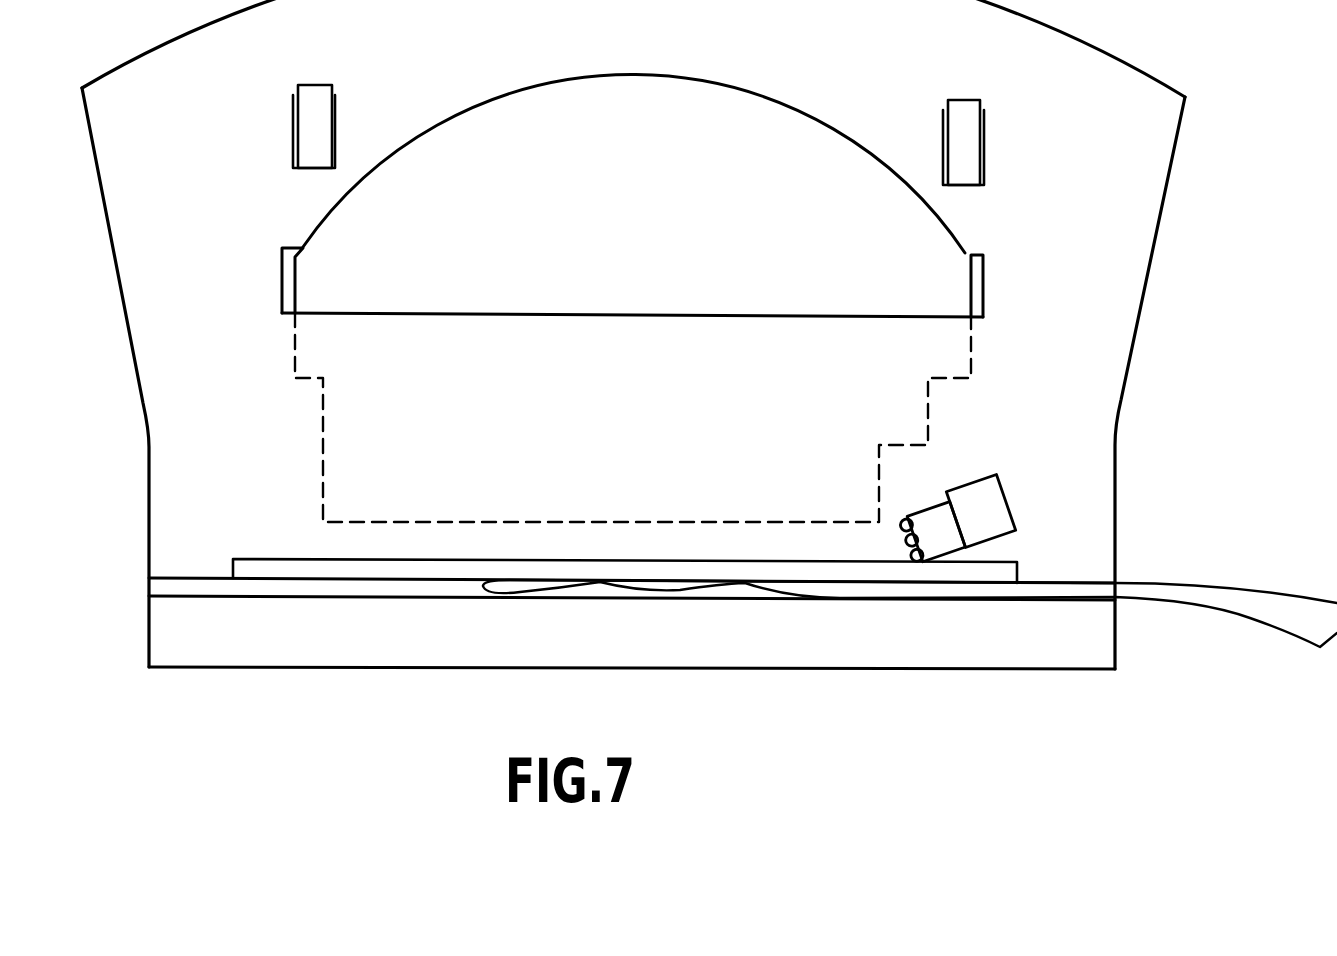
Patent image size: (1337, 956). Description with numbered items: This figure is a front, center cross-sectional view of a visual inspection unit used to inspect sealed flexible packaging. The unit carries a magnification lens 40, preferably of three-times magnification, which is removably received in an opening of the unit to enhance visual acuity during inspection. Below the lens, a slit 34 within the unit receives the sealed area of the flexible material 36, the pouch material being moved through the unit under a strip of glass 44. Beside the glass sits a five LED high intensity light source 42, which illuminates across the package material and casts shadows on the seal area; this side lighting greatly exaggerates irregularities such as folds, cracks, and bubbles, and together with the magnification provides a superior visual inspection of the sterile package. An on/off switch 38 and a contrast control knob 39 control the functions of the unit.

The slit 34 is at (272, 588).
The flexible material 36 is at (1322, 622).
The on/off switch 38 is at (312, 140).
The contrast control knob 39 is at (958, 150).
The magnification lens 40 is at (897, 273).
The five LED high intensity light source 42 is at (1000, 525).
The strip of glass 44 is at (1020, 570).